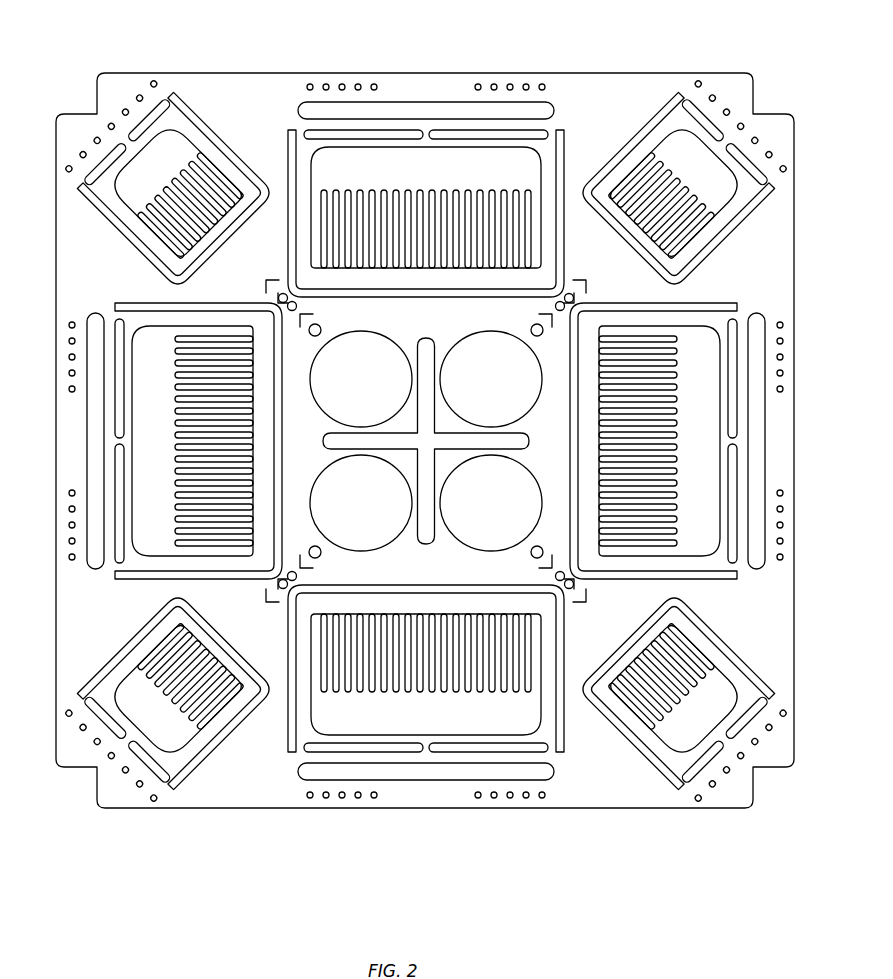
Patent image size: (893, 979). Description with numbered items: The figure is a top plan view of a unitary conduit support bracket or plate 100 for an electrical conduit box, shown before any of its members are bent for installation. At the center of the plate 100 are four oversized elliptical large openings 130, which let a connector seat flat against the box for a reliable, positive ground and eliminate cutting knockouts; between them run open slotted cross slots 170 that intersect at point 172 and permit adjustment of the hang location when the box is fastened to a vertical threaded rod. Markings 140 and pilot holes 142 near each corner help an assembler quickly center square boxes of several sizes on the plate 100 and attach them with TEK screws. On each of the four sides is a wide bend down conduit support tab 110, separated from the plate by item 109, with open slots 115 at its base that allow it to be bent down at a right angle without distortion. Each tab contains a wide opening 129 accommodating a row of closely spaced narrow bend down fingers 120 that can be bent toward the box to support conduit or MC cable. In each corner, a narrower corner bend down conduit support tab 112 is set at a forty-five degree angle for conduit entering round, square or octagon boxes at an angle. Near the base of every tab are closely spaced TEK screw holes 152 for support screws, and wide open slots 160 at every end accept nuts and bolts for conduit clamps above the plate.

The conduit support bracket or plate 100 is at (180, 30).
The separation between tab and plate 109 is at (411, 160).
The bend down conduit support tab 110 is at (460, 158).
The narrower corner bend down conduit support tab 112 is at (684, 152).
The open slot 115 is at (426, 80).
The narrow bend down finger 120 is at (427, 143).
The wide opening 129 is at (426, 150).
The large opening 130 is at (465, 598).
The marking 140 is at (266, 752).
The hole 142 is at (297, 737).
The TEK screw hole 152 is at (426, 848).
The open slot 160 is at (426, 823).
The cross slot 170 is at (495, 612).
The intersection point 172 is at (445, 612).